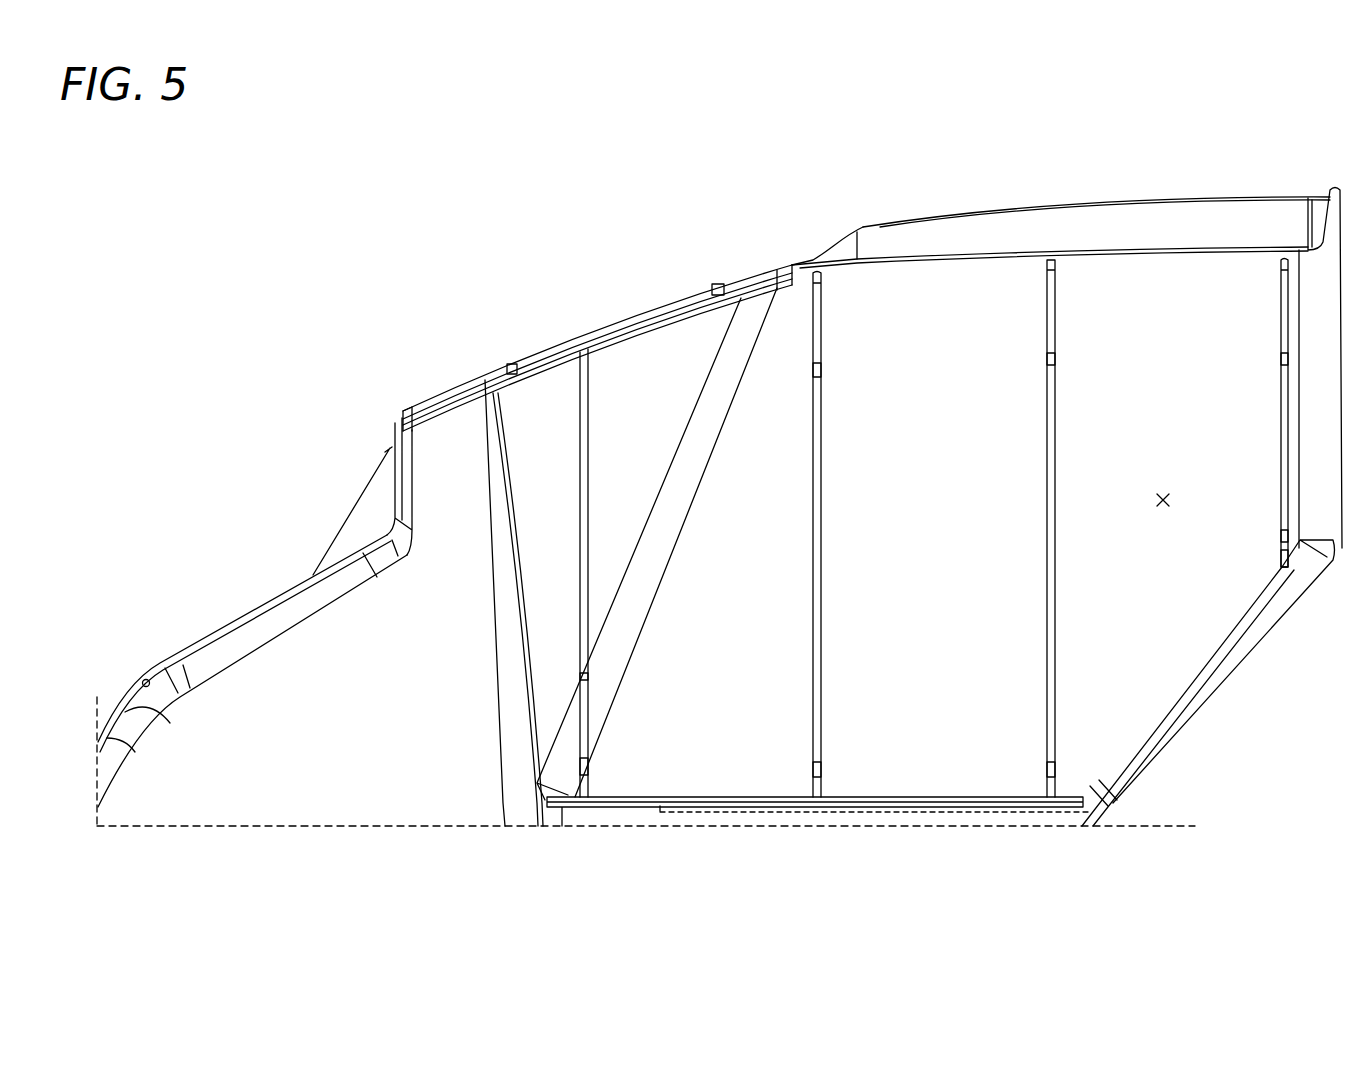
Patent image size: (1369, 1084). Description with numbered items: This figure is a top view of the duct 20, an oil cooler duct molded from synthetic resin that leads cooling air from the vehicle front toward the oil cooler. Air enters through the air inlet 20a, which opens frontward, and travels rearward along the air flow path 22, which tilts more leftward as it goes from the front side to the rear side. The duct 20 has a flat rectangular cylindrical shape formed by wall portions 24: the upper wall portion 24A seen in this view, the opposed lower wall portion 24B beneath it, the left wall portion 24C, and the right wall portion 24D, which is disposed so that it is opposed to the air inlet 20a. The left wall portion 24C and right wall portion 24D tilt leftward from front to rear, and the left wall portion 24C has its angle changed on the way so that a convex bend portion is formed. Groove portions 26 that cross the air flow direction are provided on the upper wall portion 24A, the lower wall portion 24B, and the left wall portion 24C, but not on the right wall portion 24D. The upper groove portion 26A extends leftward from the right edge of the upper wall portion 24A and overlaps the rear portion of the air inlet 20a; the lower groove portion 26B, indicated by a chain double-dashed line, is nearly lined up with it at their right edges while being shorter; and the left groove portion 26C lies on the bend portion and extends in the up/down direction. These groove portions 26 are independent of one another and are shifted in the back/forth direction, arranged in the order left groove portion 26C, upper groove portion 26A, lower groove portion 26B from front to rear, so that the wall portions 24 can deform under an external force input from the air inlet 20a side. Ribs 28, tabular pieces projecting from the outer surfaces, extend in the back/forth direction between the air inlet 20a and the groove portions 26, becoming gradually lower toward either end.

The duct 20 is at (1205, 190).
The air inlet 20a is at (1085, 202).
The air flow path 22 is at (1163, 502).
The wall portions 24 is at (716, 479).
The upper wall portion 24A is at (895, 325).
The lower wall portion 24B is at (940, 232).
The left wall portion 24C is at (258, 606).
The right wall portion 24D is at (1187, 730).
The groove portions 26 is at (605, 740).
The upper groove portion 26A is at (617, 800).
The lower groove portion 26B is at (860, 815).
The left groove portion 26C is at (145, 679).
The ribs 28 is at (585, 420).